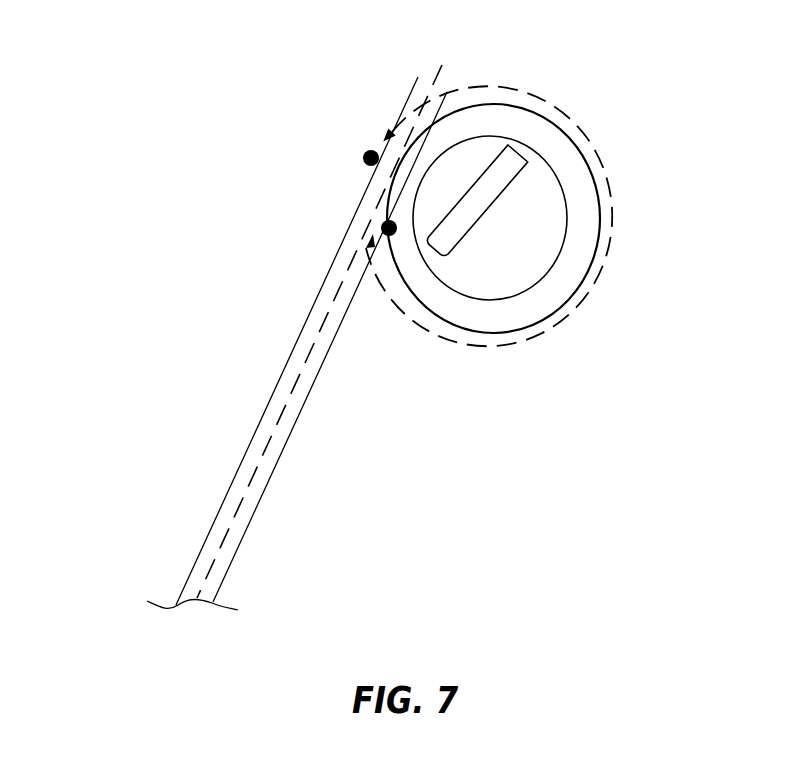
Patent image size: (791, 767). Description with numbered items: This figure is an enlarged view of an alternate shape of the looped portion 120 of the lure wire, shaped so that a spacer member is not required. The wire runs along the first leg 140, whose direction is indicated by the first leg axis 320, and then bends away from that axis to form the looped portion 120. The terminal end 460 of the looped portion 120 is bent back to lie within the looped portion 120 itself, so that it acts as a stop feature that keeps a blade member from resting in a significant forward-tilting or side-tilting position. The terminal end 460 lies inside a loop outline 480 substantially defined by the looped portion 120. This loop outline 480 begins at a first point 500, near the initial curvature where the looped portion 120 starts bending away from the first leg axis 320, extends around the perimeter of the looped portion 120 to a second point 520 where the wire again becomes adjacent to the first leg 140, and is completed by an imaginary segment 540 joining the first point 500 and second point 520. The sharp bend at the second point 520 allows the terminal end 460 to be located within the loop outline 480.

The looped portion 120 is at (447, 412).
The first leg 140 is at (262, 63).
The first leg axis 320 is at (442, 69).
The terminal end 460 is at (513, 148).
The loop outline 480 is at (609, 250).
The first point 500 is at (364, 158).
The second point 520 is at (382, 228).
The imaginary segment 540 is at (380, 187).